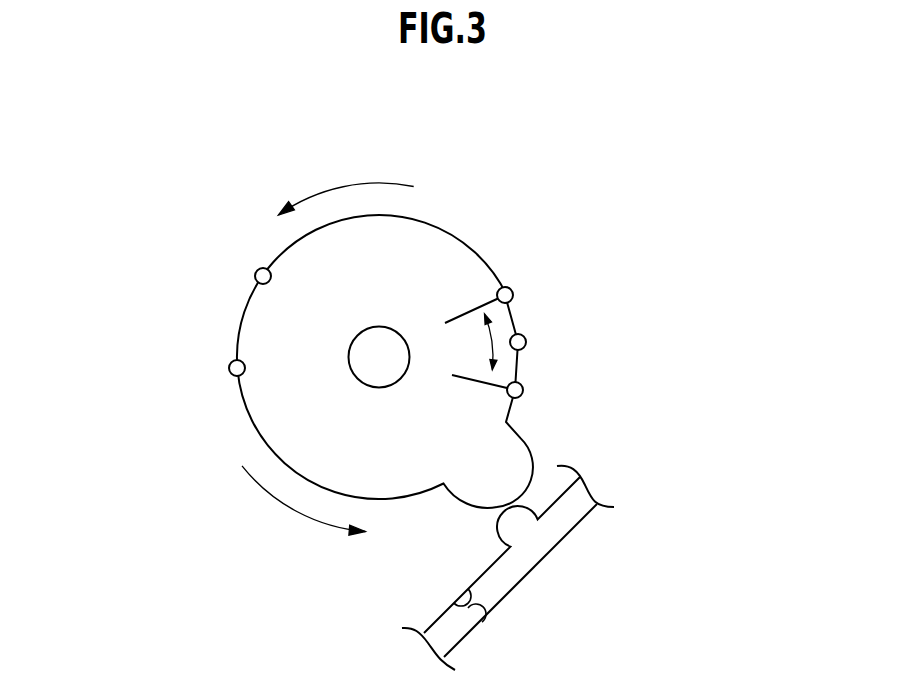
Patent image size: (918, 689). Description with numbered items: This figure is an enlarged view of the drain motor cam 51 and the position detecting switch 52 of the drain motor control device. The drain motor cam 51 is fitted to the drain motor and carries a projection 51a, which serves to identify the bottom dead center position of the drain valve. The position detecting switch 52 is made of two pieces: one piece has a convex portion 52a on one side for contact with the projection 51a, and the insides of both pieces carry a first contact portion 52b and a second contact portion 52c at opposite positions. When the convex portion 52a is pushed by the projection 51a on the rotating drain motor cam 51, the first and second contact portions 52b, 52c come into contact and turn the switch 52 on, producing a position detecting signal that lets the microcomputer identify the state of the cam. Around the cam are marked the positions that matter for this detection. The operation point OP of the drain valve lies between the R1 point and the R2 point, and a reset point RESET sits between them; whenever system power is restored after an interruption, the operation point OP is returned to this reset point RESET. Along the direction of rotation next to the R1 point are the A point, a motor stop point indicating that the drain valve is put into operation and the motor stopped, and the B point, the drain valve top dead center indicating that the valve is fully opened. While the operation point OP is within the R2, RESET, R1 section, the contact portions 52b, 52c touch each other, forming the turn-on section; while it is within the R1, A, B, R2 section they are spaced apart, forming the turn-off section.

The drain motor cam 51 is at (423, 331).
The projection 51a is at (517, 448).
The position detecting switch 52 is at (554, 568).
The convex portion 52a is at (533, 547).
The first contact portion 52b is at (465, 602).
The second contact portion 52c is at (475, 614).
The motor stop point A is at (251, 274).
The drain valve top dead center point B is at (225, 369).
The R1 point R1 is at (522, 297).
The R2 point R2 is at (534, 394).
The reset point RESET is at (560, 344).
The operation point OP is at (524, 334).